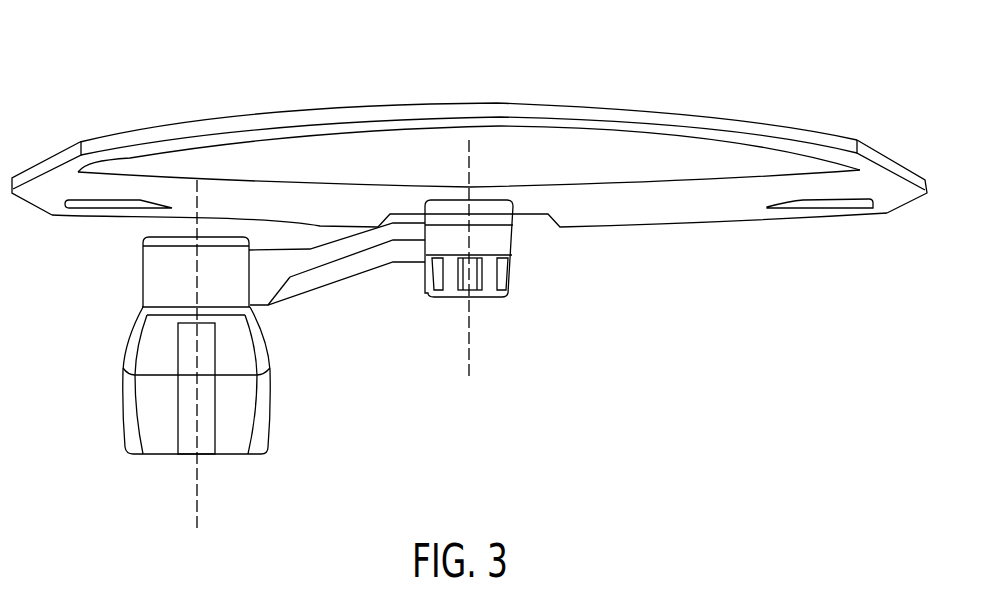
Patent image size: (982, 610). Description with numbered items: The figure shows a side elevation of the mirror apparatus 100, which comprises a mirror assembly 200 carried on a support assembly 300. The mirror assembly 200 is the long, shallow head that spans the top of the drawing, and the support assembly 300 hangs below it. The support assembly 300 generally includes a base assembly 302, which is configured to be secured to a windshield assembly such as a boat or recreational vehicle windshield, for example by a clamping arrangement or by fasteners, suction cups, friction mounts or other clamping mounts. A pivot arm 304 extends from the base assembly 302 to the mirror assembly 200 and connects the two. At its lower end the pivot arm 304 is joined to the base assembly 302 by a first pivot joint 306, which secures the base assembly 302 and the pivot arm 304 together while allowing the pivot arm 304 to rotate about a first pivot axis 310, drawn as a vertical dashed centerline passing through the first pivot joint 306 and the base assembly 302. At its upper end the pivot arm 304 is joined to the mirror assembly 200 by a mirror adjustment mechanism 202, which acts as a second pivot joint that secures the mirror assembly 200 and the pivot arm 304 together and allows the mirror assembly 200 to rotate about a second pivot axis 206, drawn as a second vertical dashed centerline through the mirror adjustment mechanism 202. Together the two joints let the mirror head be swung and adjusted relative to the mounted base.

The mirror assembly 100 is at (135, 67).
The mirror assembly 200 is at (382, 168).
The mirror adjustment mechanism 202 is at (510, 272).
The second pivot axis 206 is at (470, 352).
The support assembly 300 is at (113, 348).
The base assembly 302 is at (270, 405).
The pivot arm 304 is at (347, 270).
The first pivot joint 306 is at (145, 273).
The first pivot axis 310 is at (197, 502).